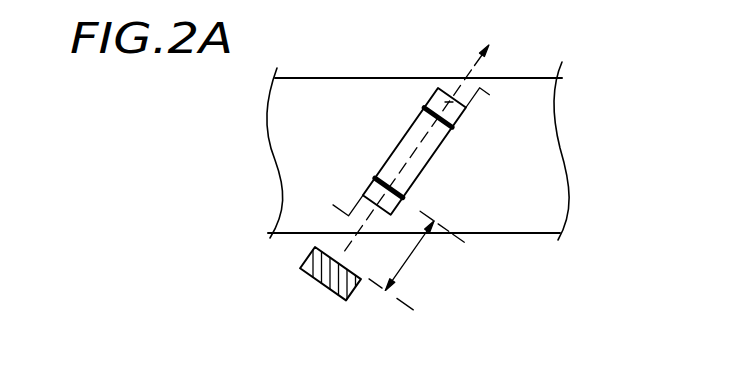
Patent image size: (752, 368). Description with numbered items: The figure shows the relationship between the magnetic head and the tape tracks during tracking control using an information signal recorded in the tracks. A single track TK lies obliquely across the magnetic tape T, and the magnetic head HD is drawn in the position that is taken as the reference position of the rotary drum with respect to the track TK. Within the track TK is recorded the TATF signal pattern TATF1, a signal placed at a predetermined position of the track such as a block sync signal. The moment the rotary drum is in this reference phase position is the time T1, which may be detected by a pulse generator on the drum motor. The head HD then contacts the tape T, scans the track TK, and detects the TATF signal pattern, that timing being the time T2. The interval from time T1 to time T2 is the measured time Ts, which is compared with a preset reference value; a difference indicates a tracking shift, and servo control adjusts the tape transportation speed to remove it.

The magnetic tape T is at (527, 78).
The track TK is at (434, 137).
The TATF signal TATF1 is at (370, 186).
The time TS Ts is at (414, 255).
The time T2 is at (461, 242).
The time T1 is at (409, 307).
The magnetic head HD is at (318, 265).